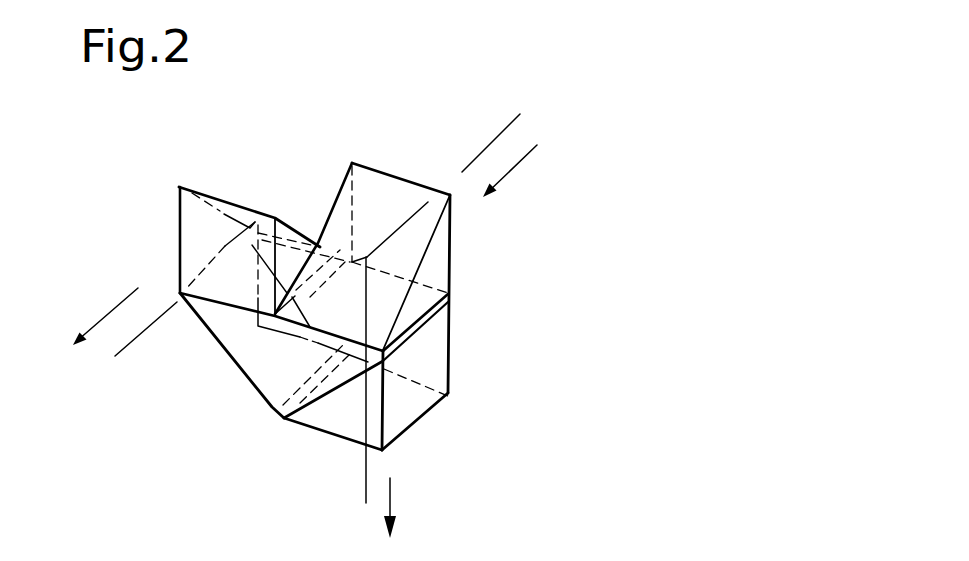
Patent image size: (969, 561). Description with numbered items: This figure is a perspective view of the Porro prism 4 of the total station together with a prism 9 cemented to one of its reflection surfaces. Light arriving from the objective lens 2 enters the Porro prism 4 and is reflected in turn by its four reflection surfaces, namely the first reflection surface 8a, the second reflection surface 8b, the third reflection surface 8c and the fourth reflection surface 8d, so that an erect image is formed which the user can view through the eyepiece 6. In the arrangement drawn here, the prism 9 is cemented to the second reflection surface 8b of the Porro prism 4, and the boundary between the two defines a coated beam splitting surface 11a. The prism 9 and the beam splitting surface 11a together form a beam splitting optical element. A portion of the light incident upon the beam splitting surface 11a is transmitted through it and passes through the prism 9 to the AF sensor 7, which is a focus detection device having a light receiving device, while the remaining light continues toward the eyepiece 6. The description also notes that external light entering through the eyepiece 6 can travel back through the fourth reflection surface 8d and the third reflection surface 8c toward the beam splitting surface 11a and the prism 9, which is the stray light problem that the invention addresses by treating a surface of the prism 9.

The Porro prism 4 is at (320, 141).
The first reflection surface 8a is at (378, 212).
The second reflection surface 8b is at (290, 416).
The third reflection surface 8c is at (193, 331).
The fourth reflection surface 8d is at (238, 207).
The prism 9 is at (430, 355).
The beam splitting surface 11a is at (338, 391).
The objective lens 2 is at (617, 156).
The eyepiece 6 is at (89, 305).
The AF sensor 7 is at (472, 397).